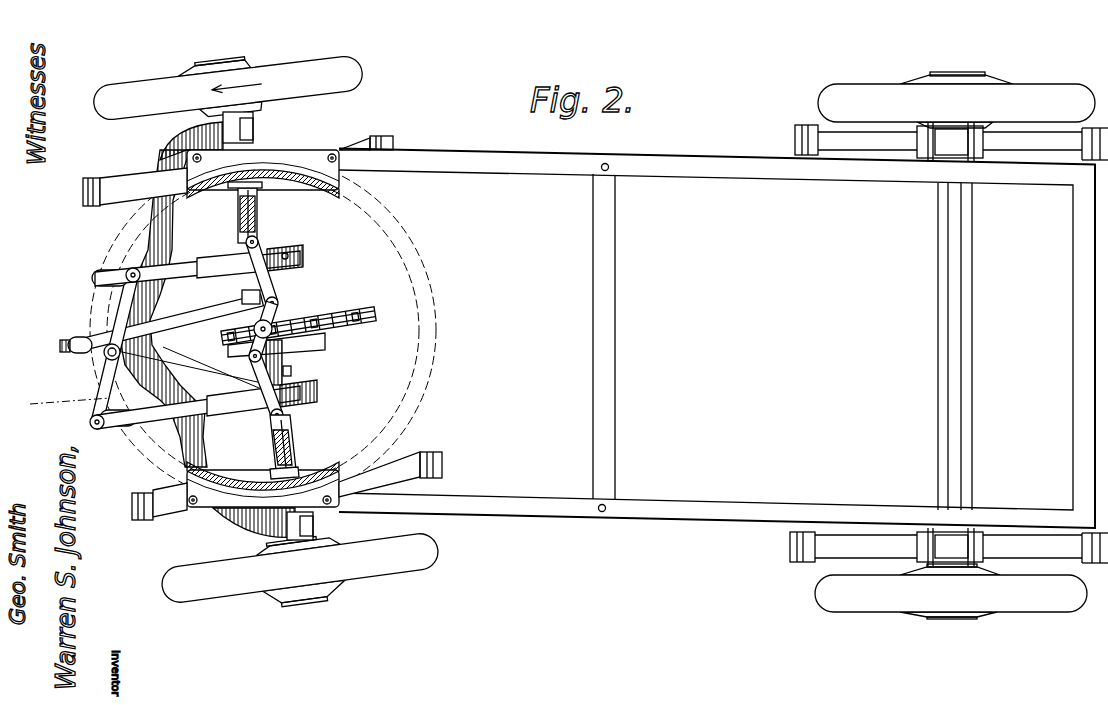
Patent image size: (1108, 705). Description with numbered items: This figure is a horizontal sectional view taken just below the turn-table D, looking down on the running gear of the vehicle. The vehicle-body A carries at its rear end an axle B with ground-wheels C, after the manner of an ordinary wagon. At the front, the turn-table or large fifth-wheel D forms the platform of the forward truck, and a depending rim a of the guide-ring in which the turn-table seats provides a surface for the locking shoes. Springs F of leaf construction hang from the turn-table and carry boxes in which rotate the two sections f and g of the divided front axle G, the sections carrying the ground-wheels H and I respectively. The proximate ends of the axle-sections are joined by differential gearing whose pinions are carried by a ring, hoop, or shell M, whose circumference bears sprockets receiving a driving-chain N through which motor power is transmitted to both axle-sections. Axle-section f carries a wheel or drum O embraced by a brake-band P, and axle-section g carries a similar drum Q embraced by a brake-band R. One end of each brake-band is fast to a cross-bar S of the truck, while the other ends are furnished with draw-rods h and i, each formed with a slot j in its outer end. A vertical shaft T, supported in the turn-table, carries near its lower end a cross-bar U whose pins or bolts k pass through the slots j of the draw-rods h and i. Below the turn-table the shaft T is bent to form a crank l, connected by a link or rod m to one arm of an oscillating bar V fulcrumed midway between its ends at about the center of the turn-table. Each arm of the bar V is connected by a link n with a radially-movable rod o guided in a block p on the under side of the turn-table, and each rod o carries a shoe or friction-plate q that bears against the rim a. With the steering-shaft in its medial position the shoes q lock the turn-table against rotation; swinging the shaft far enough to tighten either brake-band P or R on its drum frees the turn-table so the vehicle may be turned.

The vehicle-body A is at (717, 330).
The axle B is at (950, 428).
The ground-wheels C is at (872, 104).
The turn-table D is at (421, 398).
The springs F is at (165, 178).
The ground-wheel H is at (318, 62).
The ground-wheel I is at (415, 566).
The depending flange or rim a is at (320, 188).
The shoe or friction-plate q is at (258, 188).
The block p is at (238, 205).
The radially-movable rod o is at (240, 229).
The link or rod n is at (247, 244).
The axle-section f is at (278, 296).
The oscillating bar V is at (274, 327).
The driving-chain N is at (342, 314).
The ring, hoop, or shell M is at (315, 342).
The divided front axle G is at (284, 382).
The axle-section g is at (300, 384).
The wheel or drum Q is at (320, 396).
The brake-band P is at (303, 258).
The wheel or drum O is at (285, 253).
The brake-band R is at (296, 406).
The draw-rod h is at (150, 268).
The slot j is at (112, 278).
The pins or bolts k is at (130, 270).
The draw-rod i is at (160, 432).
The cross-bar S is at (183, 305).
The vertical shaft T is at (106, 358).
The cross-bar U is at (59, 407).
The crank l is at (72, 336).
The link or rod m is at (214, 316).